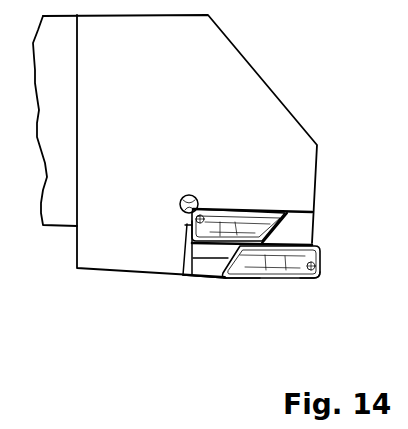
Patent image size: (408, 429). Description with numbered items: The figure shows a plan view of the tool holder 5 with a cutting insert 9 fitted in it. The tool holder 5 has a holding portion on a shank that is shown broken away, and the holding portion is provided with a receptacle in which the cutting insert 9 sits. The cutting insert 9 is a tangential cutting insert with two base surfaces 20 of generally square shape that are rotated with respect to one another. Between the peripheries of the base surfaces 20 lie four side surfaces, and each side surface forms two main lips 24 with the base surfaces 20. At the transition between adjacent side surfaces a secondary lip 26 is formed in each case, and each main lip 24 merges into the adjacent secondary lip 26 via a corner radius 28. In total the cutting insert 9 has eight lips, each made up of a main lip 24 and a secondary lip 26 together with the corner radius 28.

The tool holder 5 is at (239, 78).
The main lip 24 is at (226, 206).
The secondary lip 26 is at (186, 225).
The base surface 20 is at (210, 277).
The cutting insert 9 is at (250, 279).
The corner radius 28 is at (320, 280).